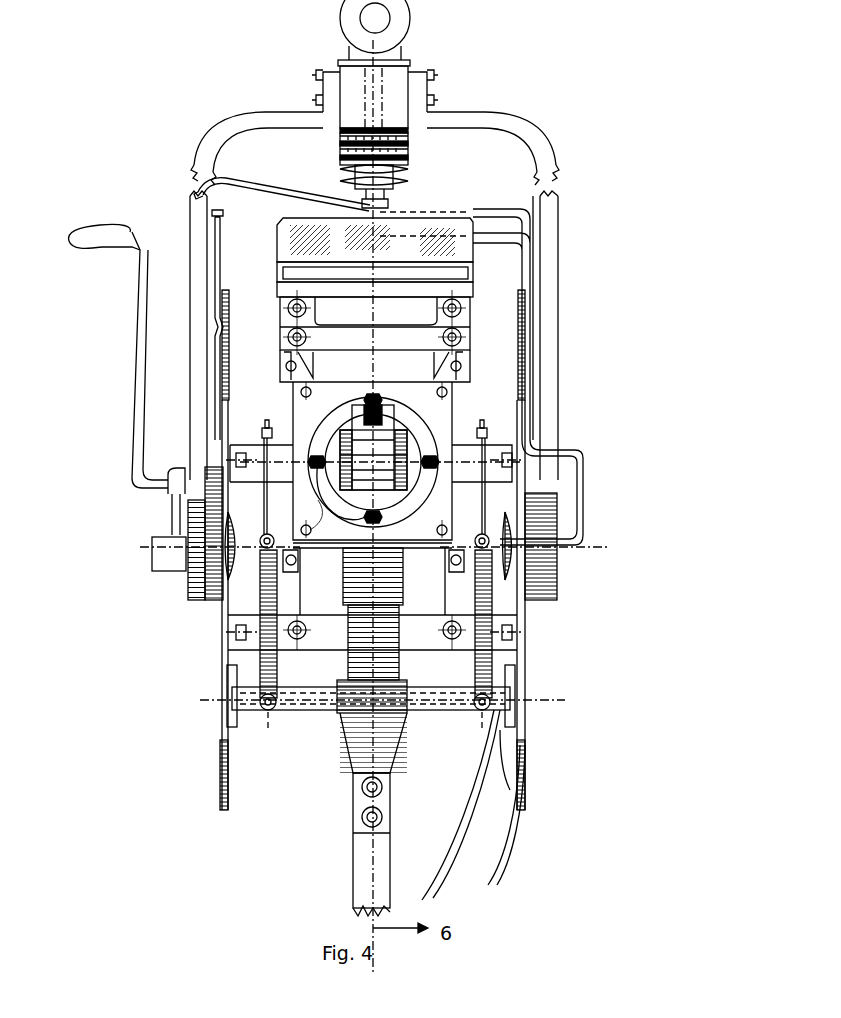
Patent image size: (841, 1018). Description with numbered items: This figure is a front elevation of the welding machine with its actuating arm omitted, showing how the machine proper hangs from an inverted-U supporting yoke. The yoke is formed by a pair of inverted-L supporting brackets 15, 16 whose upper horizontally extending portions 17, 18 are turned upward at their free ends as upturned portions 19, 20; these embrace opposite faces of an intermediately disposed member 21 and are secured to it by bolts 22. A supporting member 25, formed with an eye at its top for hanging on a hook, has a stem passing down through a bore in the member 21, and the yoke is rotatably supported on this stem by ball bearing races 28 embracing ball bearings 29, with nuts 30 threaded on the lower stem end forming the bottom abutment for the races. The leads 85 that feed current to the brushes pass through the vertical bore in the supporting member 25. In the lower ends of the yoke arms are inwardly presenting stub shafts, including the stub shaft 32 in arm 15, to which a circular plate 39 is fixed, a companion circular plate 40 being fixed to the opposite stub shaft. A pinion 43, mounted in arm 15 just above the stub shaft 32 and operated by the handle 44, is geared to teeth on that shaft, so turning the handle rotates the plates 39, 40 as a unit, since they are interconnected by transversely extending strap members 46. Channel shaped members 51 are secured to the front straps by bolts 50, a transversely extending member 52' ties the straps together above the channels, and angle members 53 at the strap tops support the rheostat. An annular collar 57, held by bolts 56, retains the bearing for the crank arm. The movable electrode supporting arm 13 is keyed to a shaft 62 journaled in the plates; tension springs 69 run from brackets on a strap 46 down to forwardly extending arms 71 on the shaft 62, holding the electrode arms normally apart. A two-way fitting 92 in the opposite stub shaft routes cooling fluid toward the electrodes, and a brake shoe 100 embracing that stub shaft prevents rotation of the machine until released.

The supporting member 25 is at (401, 12).
The upturned portion 19 is at (334, 80).
The intermediately disposed member 21 is at (395, 82).
The upturned portion 20 is at (419, 82).
The bolts 22 is at (314, 75).
The upper horizontally extending portion 17 is at (254, 118).
The upper horizontally extending portion 18 is at (480, 118).
The ball bearing races 28 is at (406, 136).
The ball bearings 29 is at (343, 141).
The nuts 30 is at (406, 173).
The leads 85 is at (252, 192).
The supporting bracket 15 is at (196, 216).
The supporting bracket 16 is at (548, 226).
The transversely extending member 52' is at (375, 323).
The angle members 53 is at (288, 316).
The bolts 50 is at (286, 368).
The channel shaped members 51 is at (304, 373).
The annular collar 57 is at (416, 432).
The bolts 56 is at (362, 518).
The strap members 46 is at (263, 438).
The tension springs 69 is at (278, 662).
The forwardly extending arms 71 is at (269, 720).
The shaft 62 is at (312, 710).
The circular plate 39 is at (222, 660).
The circular plate 40 is at (526, 658).
The electrode supporting arm 13 is at (365, 866).
The handle 44 is at (134, 380).
The pinion 43 is at (212, 482).
The stub shaft 32 is at (216, 540).
The two-way fitting 92 is at (570, 550).
The brake shoe 100 is at (530, 525).